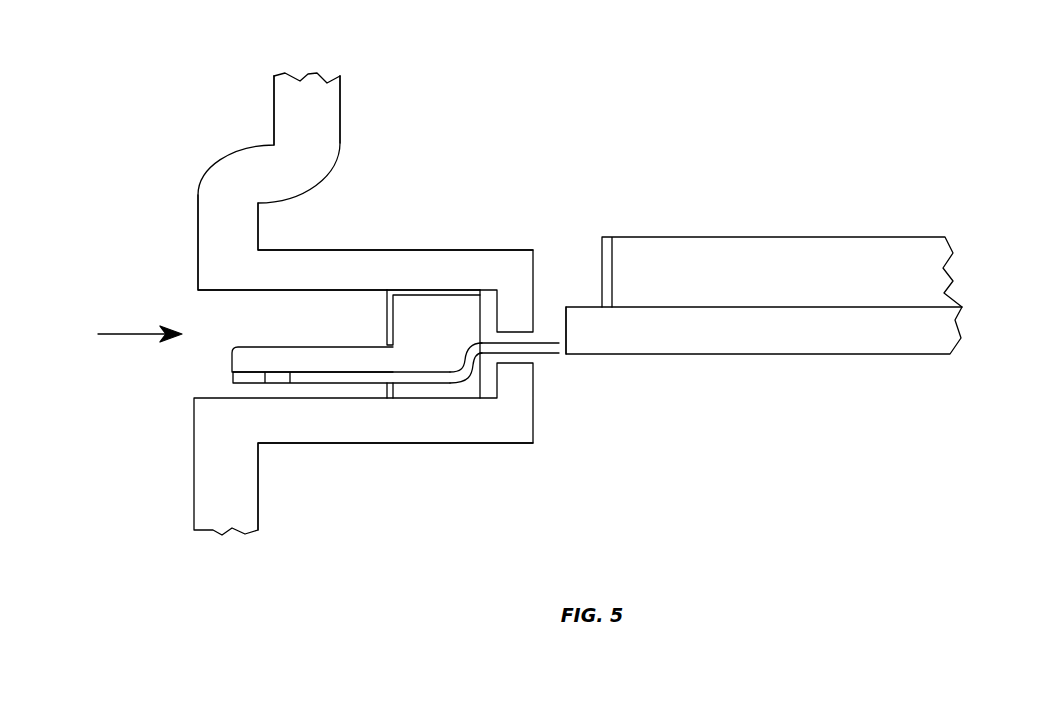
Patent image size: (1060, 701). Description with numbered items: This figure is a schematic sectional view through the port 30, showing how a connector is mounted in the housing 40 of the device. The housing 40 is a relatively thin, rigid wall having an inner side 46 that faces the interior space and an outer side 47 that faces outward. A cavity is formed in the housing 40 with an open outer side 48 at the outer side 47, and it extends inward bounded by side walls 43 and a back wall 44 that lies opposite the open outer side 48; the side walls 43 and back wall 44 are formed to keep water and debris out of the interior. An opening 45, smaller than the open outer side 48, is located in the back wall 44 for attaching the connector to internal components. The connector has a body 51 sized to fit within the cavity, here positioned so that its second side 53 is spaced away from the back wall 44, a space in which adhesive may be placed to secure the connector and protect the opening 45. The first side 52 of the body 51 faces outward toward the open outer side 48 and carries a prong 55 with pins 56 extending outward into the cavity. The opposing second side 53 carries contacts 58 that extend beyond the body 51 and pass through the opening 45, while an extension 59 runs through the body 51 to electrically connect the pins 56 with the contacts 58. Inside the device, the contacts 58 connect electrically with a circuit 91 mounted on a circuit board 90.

The port 30 is at (176, 369).
The housing 40 is at (308, 82).
The side walls 43 is at (318, 296).
The back wall 44 is at (498, 308).
The opening 45 is at (522, 358).
The inner side 46 is at (341, 100).
The outer side 47 is at (273, 100).
The open outer side 48 is at (223, 308).
The body 51 is at (448, 320).
The first side 52 is at (387, 396).
The second side 53 is at (480, 387).
The prong 55 is at (288, 345).
The pins 56 is at (242, 375).
The contacts 58 is at (572, 308).
The extension 59 is at (468, 360).
The circuit board 90 is at (927, 332).
The circuit 91 is at (910, 270).